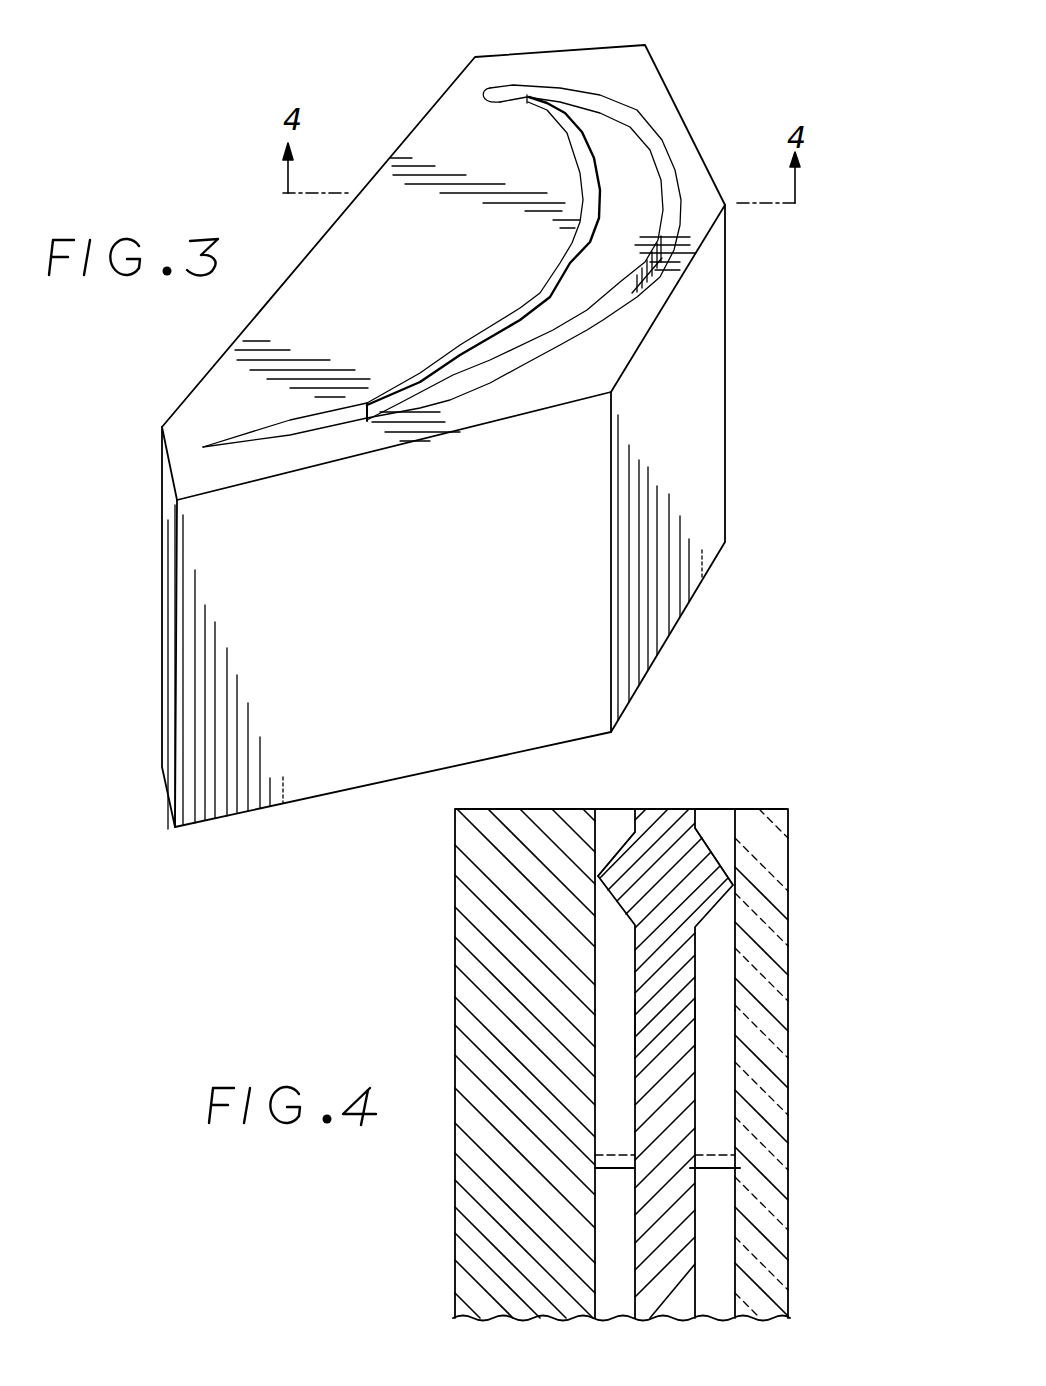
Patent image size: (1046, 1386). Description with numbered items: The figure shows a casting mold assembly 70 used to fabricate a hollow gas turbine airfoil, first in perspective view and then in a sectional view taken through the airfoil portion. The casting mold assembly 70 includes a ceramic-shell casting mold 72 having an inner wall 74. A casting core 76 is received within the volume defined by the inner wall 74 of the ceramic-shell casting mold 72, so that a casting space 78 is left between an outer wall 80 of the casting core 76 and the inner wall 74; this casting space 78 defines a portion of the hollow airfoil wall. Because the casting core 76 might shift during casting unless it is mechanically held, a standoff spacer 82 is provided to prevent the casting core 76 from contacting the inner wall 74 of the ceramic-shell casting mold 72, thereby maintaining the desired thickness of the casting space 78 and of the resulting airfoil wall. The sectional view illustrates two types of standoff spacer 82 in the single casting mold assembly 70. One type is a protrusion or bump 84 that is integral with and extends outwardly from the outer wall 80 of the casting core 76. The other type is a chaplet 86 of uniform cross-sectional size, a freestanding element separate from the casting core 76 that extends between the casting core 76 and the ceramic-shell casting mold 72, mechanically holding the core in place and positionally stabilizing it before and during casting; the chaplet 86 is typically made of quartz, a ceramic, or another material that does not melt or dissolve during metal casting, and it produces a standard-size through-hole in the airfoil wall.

In FIG. 3, the casting mold assembly 70 is at (406, 87).
In FIG. 4, the casting mold assembly 70 is at (441, 863).
In FIG. 3, the ceramic-shell casting mold 72 is at (537, 57).
In FIG. 4, the ceramic-shell casting mold 72 is at (463, 975).
In FIG. 3, the inner wall 74 is at (674, 180).
In FIG. 4, the inner wall 74 is at (600, 1083).
In FIG. 3, the casting core 76 is at (625, 215).
In FIG. 4, the casting core 76 is at (665, 809).
In FIG. 3, the casting space 78 is at (510, 322).
In FIG. 4, the casting space 78 is at (612, 945).
In FIG. 3, the outer wall 80 is at (452, 374).
In FIG. 4, the outer wall 80 is at (633, 1027).
In FIG. 4, the standoff spacer 82 is at (601, 862).
In FIG. 4, the protrusion or bump 84 is at (715, 870).
In FIG. 4, the chaplet 86 is at (722, 1153).